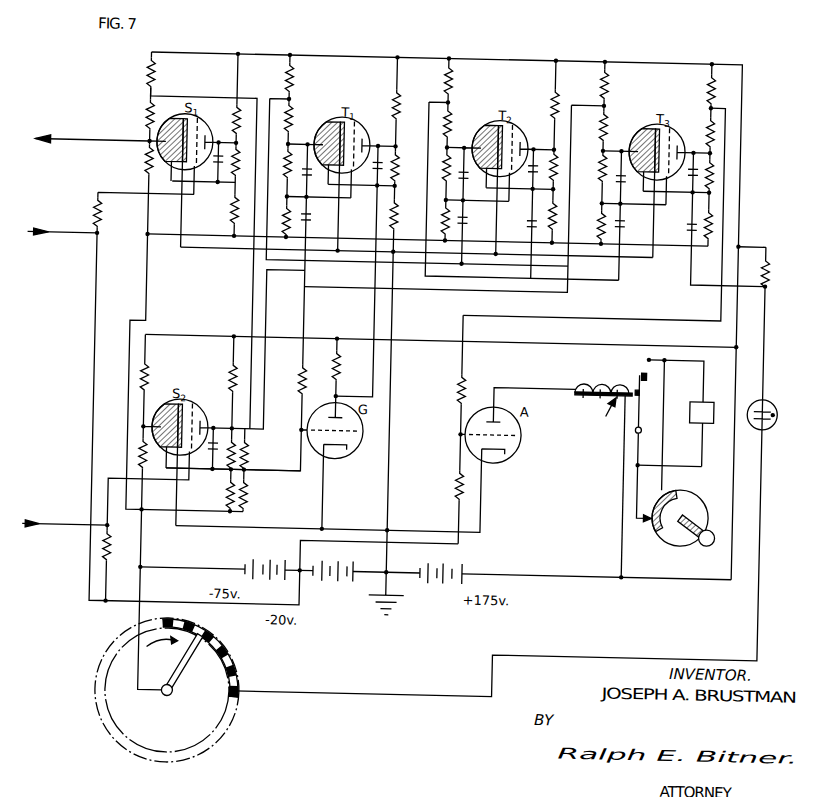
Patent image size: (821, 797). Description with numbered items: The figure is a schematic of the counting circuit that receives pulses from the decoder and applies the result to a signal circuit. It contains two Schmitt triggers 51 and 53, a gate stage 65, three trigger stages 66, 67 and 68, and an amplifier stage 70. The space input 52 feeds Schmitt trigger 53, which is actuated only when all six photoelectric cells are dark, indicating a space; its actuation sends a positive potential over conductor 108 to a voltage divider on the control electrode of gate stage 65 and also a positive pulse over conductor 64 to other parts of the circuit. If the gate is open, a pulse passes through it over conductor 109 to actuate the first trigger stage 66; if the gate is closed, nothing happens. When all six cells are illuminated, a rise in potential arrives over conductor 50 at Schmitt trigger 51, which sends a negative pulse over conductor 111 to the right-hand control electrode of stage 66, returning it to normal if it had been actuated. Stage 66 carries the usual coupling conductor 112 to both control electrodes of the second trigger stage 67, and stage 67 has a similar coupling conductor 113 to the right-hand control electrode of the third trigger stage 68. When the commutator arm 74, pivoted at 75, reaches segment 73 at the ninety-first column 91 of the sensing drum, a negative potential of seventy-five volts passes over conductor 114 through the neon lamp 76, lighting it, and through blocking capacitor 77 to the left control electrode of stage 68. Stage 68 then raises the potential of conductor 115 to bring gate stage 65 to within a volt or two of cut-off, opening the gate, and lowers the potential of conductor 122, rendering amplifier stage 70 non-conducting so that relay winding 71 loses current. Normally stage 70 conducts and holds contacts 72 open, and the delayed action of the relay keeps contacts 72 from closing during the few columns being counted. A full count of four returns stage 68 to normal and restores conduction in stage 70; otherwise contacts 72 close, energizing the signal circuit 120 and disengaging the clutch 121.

The conductor 108 is at (200, 100).
The Schmitt trigger 53 is at (202, 129).
The conductor 64 is at (80, 145).
The space input lead 52 is at (60, 241).
The coupling conductor 112 is at (262, 263).
The conductor 111 is at (264, 305).
The conductor 115 is at (303, 302).
The conductor 109 is at (372, 312).
The first trigger stage 66 is at (354, 123).
The coupling conductor 113 is at (422, 100).
The second trigger stage 67 is at (514, 124).
The third trigger stage 68 is at (666, 122).
The conductor 122 is at (720, 195).
The blocking capacitor 77 is at (688, 228).
The Schmitt trigger 51 is at (166, 409).
The conductor 50 is at (25, 531).
The gate stage 65 is at (332, 460).
The amplifier stage 70 is at (484, 407).
The relay winding 71 is at (603, 380).
The contacts 72 is at (641, 371).
The signal circuit 120 is at (695, 396).
The clutch 121 is at (687, 491).
The neon lamp 76 is at (771, 396).
The conductor 114 is at (615, 652).
The ninety-first column 91 is at (246, 697).
The segment 73 is at (245, 701).
The commutator arm 74 is at (193, 664).
The brush arm hub 75 is at (176, 701).